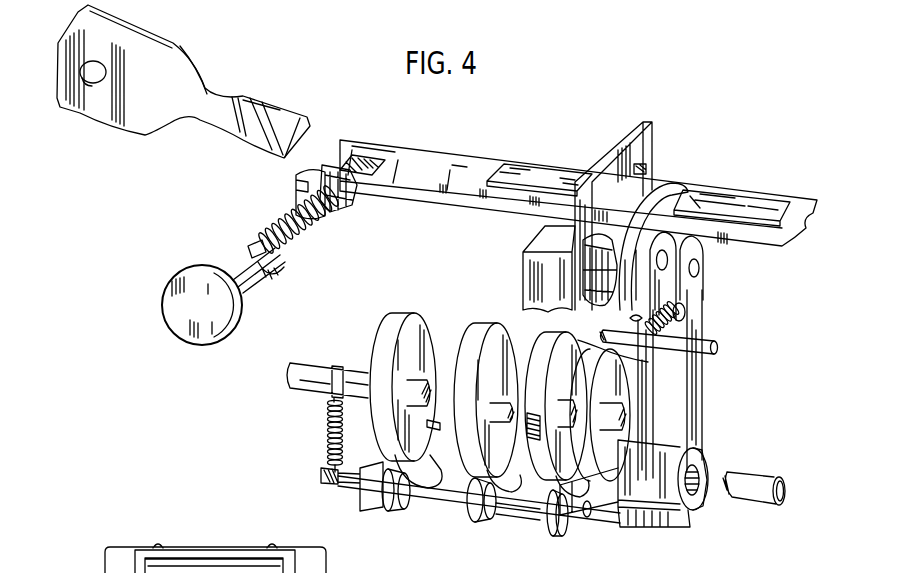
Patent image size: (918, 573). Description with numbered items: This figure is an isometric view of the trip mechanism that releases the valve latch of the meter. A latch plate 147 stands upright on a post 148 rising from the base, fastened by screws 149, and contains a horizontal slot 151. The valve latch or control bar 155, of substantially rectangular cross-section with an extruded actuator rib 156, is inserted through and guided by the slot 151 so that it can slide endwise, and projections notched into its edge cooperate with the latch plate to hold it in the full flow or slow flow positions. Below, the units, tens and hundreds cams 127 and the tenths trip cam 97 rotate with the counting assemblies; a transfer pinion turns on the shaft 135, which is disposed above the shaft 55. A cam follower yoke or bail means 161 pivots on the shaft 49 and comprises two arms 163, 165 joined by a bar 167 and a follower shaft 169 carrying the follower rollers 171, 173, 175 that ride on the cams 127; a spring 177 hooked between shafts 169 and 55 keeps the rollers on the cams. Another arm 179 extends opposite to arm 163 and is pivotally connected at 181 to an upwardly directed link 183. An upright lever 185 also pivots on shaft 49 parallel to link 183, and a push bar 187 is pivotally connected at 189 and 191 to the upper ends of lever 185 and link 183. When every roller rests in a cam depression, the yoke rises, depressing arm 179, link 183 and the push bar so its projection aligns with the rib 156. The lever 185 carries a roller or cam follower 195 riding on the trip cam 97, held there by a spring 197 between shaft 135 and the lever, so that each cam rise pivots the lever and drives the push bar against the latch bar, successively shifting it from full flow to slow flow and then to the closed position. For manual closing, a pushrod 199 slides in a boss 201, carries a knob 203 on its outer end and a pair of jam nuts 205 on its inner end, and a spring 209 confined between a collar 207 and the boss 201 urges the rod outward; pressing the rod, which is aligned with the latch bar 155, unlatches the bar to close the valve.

The shaft 49 is at (739, 498).
The shaft 55 is at (292, 380).
The trip cam 97 is at (600, 475).
The cam 127 is at (413, 368).
The shaft 135 is at (718, 347).
The latch plate 147 is at (645, 137).
The post 148 is at (524, 273).
The screws 149 is at (590, 300).
The horizontal slot 151 is at (646, 170).
The valve latch or control bar 155 is at (462, 156).
The actuator rib 156 is at (527, 175).
The cam follower yoke or bail means 161 is at (543, 523).
The arm 163 is at (625, 510).
The arm 165 is at (362, 498).
The bar 167 is at (415, 458).
The follower shaft 169 is at (507, 507).
The follower roller 171 is at (557, 537).
The follower roller 173 is at (482, 524).
The follower roller 175 is at (403, 508).
The spring 177 is at (326, 438).
The arm 179 is at (672, 520).
The pivotal connection 181 is at (708, 483).
The link 183 is at (697, 325).
The upright lever 185 is at (631, 320).
The push bar 187 is at (670, 193).
The pivotal connection 189 is at (667, 265).
The pivotal connection 191 is at (700, 270).
The roller or cam follower 195 is at (648, 362).
The spring 197 is at (690, 318).
The pushrod 199 is at (257, 272).
The boss 201 is at (333, 218).
The knob 203 is at (161, 288).
The jam nuts 205 is at (340, 160).
The collar 207 is at (249, 247).
The spring 209 is at (282, 235).